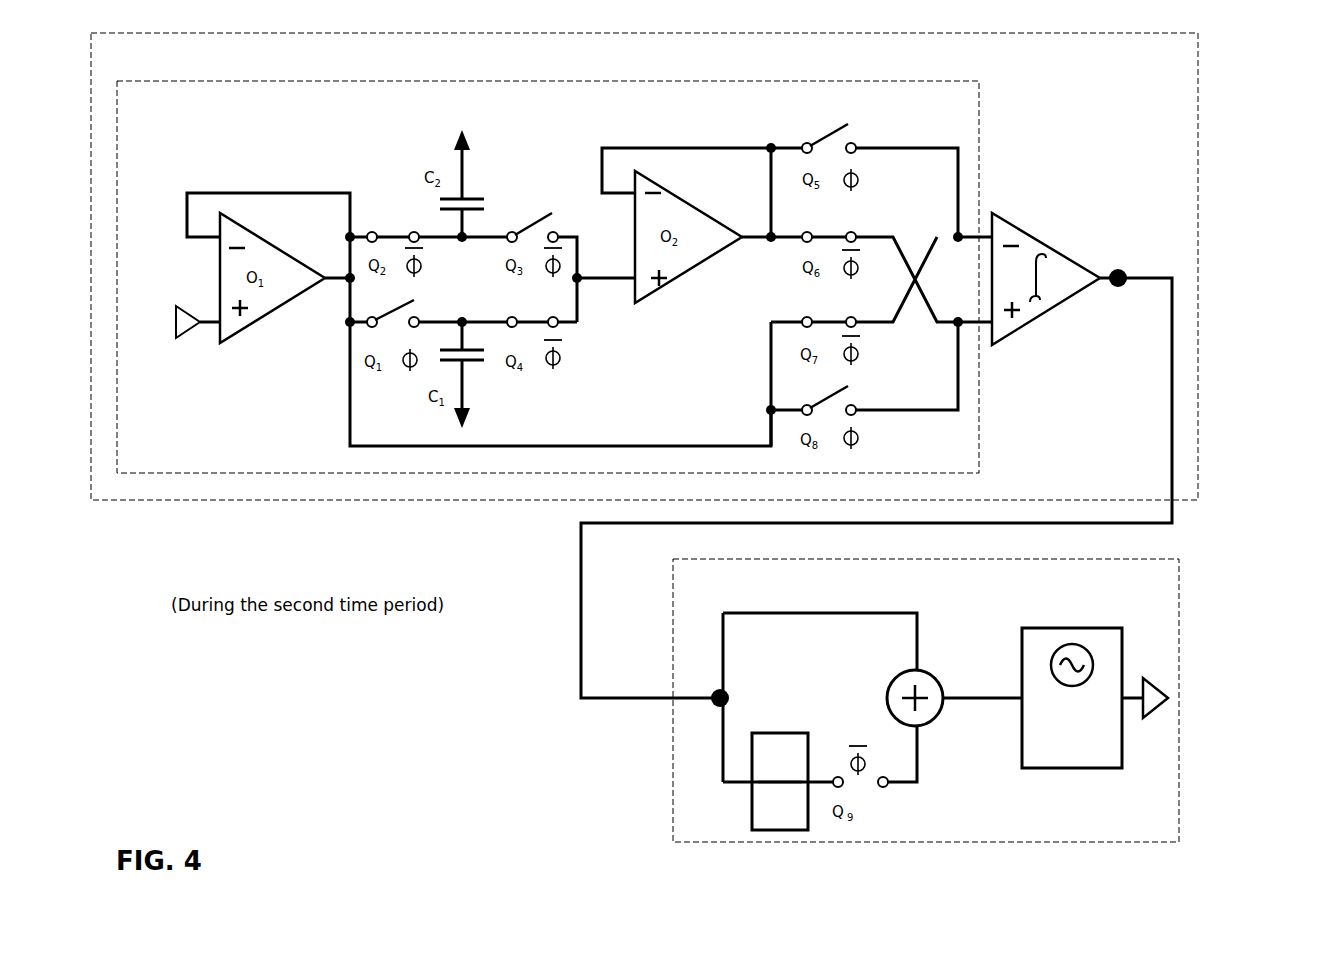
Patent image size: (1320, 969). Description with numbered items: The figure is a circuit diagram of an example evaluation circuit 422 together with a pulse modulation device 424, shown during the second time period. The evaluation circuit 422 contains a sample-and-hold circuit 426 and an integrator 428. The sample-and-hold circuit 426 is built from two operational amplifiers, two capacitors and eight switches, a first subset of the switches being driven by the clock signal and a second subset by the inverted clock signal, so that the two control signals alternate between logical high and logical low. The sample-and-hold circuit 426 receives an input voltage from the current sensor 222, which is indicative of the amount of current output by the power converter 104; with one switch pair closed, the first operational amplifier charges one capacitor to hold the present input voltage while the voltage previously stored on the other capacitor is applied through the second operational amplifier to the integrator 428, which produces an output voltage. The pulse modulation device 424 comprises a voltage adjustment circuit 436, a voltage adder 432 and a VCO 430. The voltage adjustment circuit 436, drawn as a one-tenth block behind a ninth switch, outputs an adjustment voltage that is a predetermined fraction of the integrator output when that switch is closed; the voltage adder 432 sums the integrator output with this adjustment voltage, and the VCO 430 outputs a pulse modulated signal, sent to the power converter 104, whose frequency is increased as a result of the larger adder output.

The evaluation circuit 422 is at (1198, 146).
The pulse modulation device 424 is at (1180, 622).
The sample-and-hold circuit 426 is at (545, 80).
The integrator 428 is at (1020, 228).
The VCO 430 is at (1045, 628).
The voltage adder 432 is at (905, 672).
The voltage adjustment circuit 436 is at (765, 733).
The current sensor 222 is at (175, 370).
The power converter 104 is at (1211, 687).